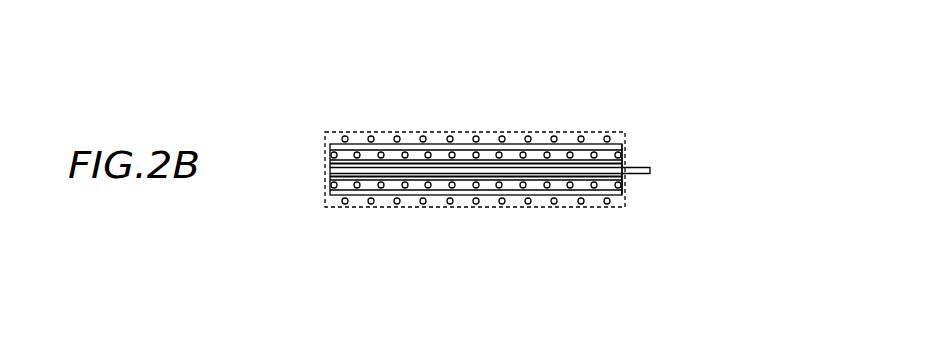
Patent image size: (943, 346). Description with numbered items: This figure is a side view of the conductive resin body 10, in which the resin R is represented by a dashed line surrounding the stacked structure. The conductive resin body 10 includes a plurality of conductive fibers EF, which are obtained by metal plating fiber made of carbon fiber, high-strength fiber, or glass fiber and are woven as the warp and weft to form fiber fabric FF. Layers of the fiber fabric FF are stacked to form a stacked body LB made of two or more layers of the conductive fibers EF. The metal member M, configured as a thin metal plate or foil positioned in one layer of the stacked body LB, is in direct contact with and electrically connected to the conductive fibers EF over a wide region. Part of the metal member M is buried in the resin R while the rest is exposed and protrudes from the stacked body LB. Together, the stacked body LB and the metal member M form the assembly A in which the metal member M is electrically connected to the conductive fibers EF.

The conductive resin body 10 is at (635, 67).
The resin R is at (345, 132).
The stacked body LB is at (322, 138).
The conductive fiber EF is at (355, 162).
The fiber fabric FF is at (632, 142).
The metal member M is at (650, 170).
The assembly A is at (615, 212).